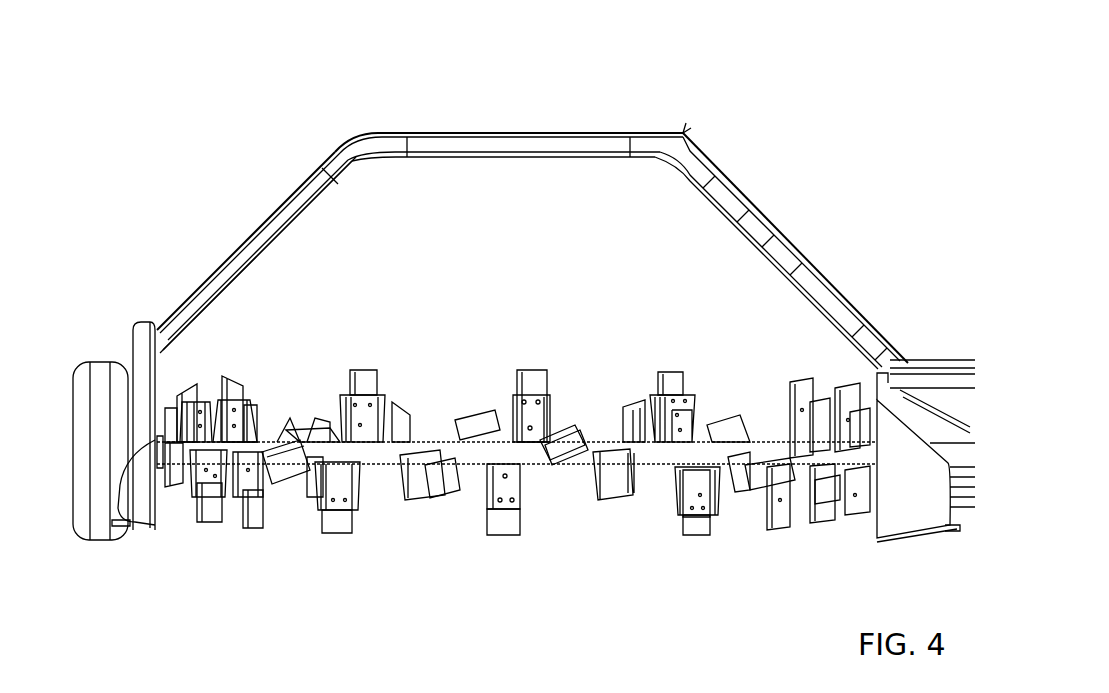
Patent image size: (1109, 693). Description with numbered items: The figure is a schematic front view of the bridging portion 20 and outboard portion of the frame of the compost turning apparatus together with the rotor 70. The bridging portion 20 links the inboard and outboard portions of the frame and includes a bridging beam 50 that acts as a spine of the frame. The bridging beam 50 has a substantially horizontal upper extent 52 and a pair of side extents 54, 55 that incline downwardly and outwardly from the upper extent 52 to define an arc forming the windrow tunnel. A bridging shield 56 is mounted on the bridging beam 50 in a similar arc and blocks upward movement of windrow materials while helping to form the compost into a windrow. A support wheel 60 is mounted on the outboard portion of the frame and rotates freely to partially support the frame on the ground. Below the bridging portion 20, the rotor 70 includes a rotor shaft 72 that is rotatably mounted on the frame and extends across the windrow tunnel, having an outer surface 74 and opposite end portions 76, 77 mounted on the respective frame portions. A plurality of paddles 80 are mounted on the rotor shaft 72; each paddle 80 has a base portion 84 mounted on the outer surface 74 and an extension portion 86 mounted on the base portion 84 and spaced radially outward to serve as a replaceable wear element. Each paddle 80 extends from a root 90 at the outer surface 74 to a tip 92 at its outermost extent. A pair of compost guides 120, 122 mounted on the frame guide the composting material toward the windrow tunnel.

The bridging portion 20 is at (712, 92).
The bridging beam 50 is at (532, 228).
The upper extent 52 is at (500, 145).
The side extent 54 is at (738, 202).
The side extent 55 is at (262, 233).
The bridging shield 56 is at (688, 136).
The support wheel 60 is at (86, 443).
The rotor 70 is at (517, 473).
The rotor shaft 72 is at (536, 470).
The outer surface 74 is at (375, 470).
The end portion 76 is at (862, 500).
The end portion 77 is at (170, 495).
The paddle 80 is at (538, 448).
The base portion 84 is at (540, 414).
The extension portion 86 is at (522, 386).
The root 90 is at (505, 468).
The tip 92 is at (500, 535).
The compost guide 120 is at (905, 513).
The compost guide 122 is at (157, 524).